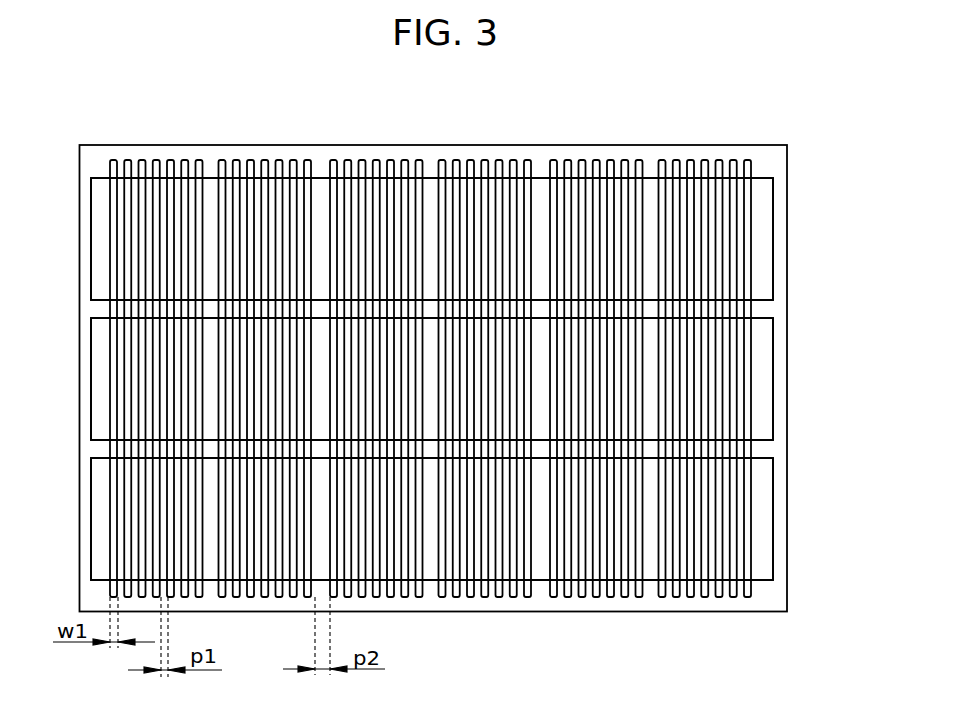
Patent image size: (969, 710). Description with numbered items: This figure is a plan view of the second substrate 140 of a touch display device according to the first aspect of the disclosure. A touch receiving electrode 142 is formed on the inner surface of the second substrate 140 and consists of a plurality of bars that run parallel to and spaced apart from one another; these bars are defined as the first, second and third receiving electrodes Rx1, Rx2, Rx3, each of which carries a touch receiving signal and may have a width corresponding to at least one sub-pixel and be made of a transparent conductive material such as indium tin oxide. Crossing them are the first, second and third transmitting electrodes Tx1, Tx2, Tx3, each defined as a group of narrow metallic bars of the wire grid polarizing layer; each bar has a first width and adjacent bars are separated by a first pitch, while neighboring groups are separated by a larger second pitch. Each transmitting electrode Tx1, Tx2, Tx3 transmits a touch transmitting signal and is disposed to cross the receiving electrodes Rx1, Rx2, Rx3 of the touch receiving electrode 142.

The second substrate 140 is at (787, 180).
The touch receiving electrode 142 is at (773, 223).
The first transmitting electrode Tx1 is at (315, 130).
The second transmitting electrode Tx2 is at (537, 130).
The third transmitting electrode Tx3 is at (757, 130).
The first receiving electrode Rx1 is at (70, 177).
The second receiving electrode Rx2 is at (70, 318).
The third receiving electrode Rx3 is at (70, 457).